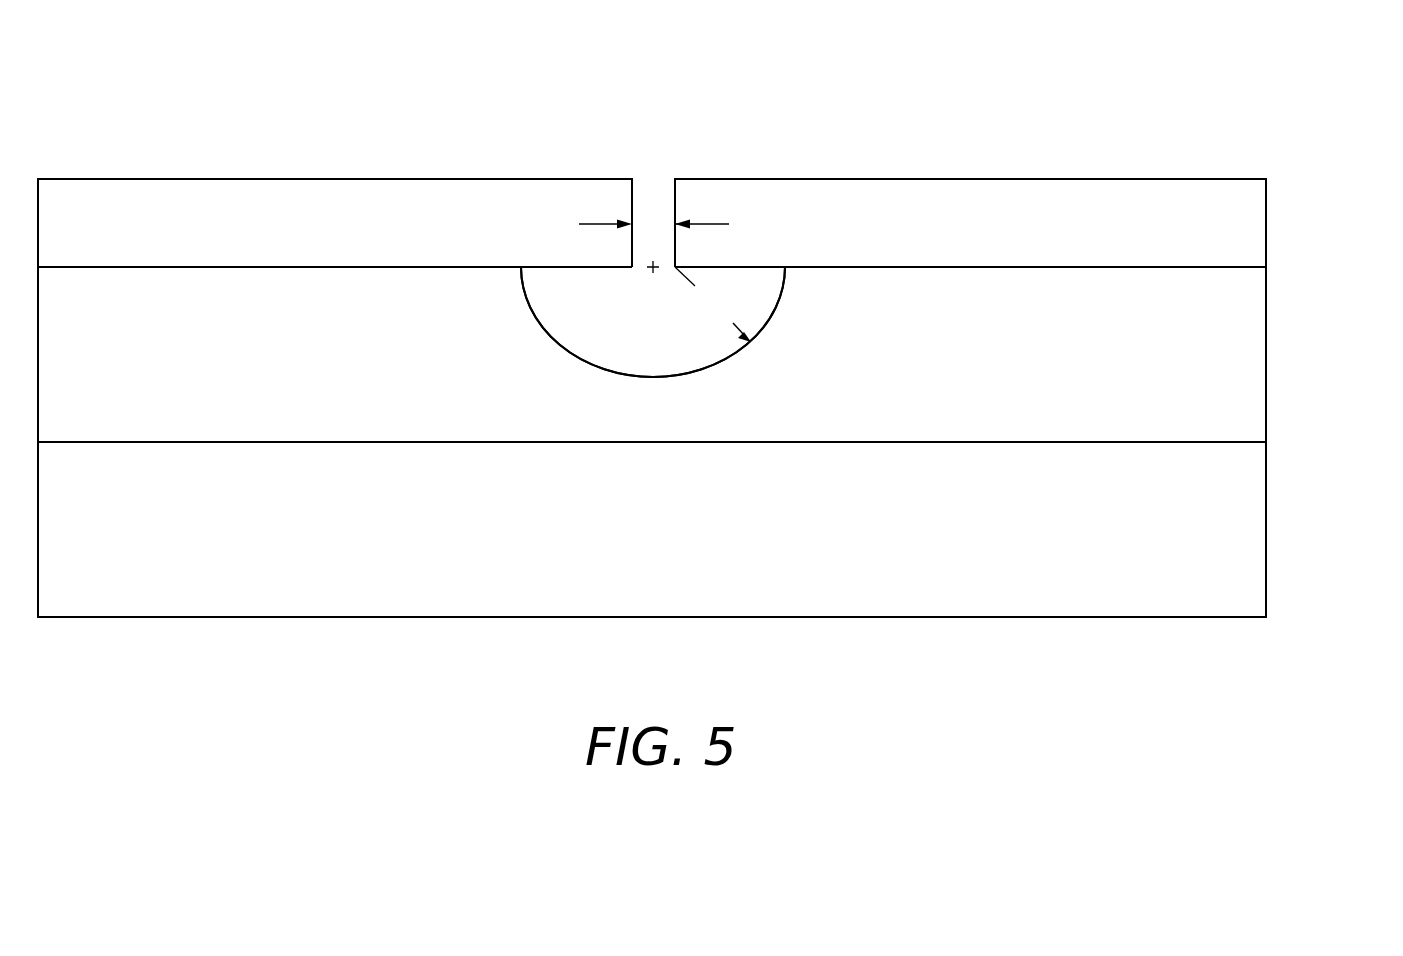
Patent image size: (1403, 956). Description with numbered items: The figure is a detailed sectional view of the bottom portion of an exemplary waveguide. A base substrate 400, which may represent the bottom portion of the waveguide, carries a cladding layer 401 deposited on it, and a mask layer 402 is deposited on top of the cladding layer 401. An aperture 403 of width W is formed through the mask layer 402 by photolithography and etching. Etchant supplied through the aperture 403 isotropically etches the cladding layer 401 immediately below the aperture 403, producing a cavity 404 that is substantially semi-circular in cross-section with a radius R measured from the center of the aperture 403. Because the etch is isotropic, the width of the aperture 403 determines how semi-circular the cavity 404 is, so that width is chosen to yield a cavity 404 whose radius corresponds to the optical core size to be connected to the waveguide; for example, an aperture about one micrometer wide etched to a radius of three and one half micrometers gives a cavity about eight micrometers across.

The base substrate 400 is at (1237, 527).
The cladding layer 401 is at (1237, 350).
The mask layer 402 is at (1237, 222).
The aperture 403 is at (657, 185).
The cavity 404 is at (751, 317).